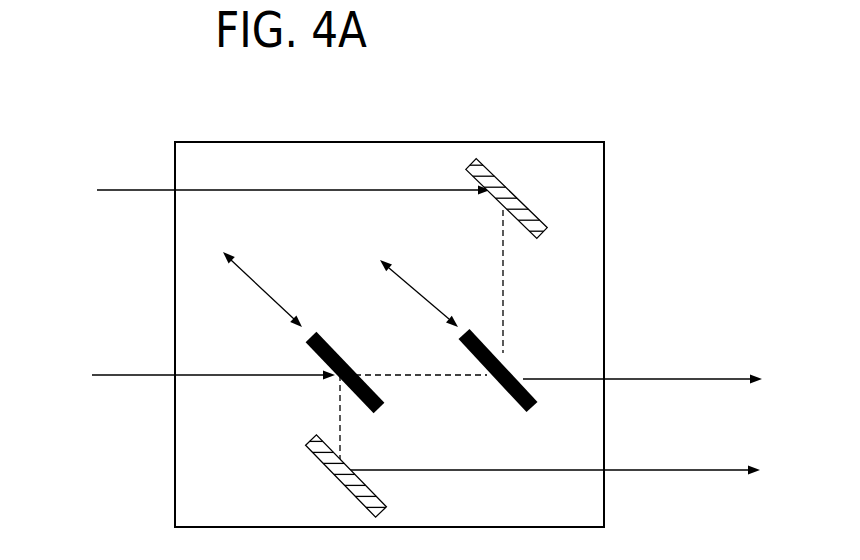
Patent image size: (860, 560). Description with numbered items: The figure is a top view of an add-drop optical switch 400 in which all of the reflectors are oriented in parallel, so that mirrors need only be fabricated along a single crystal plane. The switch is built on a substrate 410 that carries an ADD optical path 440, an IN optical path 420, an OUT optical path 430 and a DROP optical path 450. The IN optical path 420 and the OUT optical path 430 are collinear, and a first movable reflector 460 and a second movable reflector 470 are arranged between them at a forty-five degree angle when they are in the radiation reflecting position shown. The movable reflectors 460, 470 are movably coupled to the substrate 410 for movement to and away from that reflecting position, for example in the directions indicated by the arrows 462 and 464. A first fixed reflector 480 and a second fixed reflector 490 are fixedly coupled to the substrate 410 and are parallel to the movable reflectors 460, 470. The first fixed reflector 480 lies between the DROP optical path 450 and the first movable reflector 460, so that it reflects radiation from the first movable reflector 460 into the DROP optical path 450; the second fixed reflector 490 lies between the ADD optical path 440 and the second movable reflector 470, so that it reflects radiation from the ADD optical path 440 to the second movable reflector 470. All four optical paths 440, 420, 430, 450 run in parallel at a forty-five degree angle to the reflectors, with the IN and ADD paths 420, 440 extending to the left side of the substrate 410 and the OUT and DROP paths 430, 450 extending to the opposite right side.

The add-drop optical switch 400 is at (636, 157).
The substrate 410 is at (484, 141).
The IN optical path 420 is at (130, 372).
The OUT optical path 430 is at (677, 378).
The ADD optical path 440 is at (125, 188).
The DROP optical path 450 is at (662, 470).
The first movable reflector 460 is at (340, 358).
The arrow 462 is at (255, 280).
The arrow 464 is at (412, 280).
The second movable reflector 470 is at (520, 372).
The first fixed reflector 480 is at (383, 502).
The second fixed reflector 490 is at (540, 219).